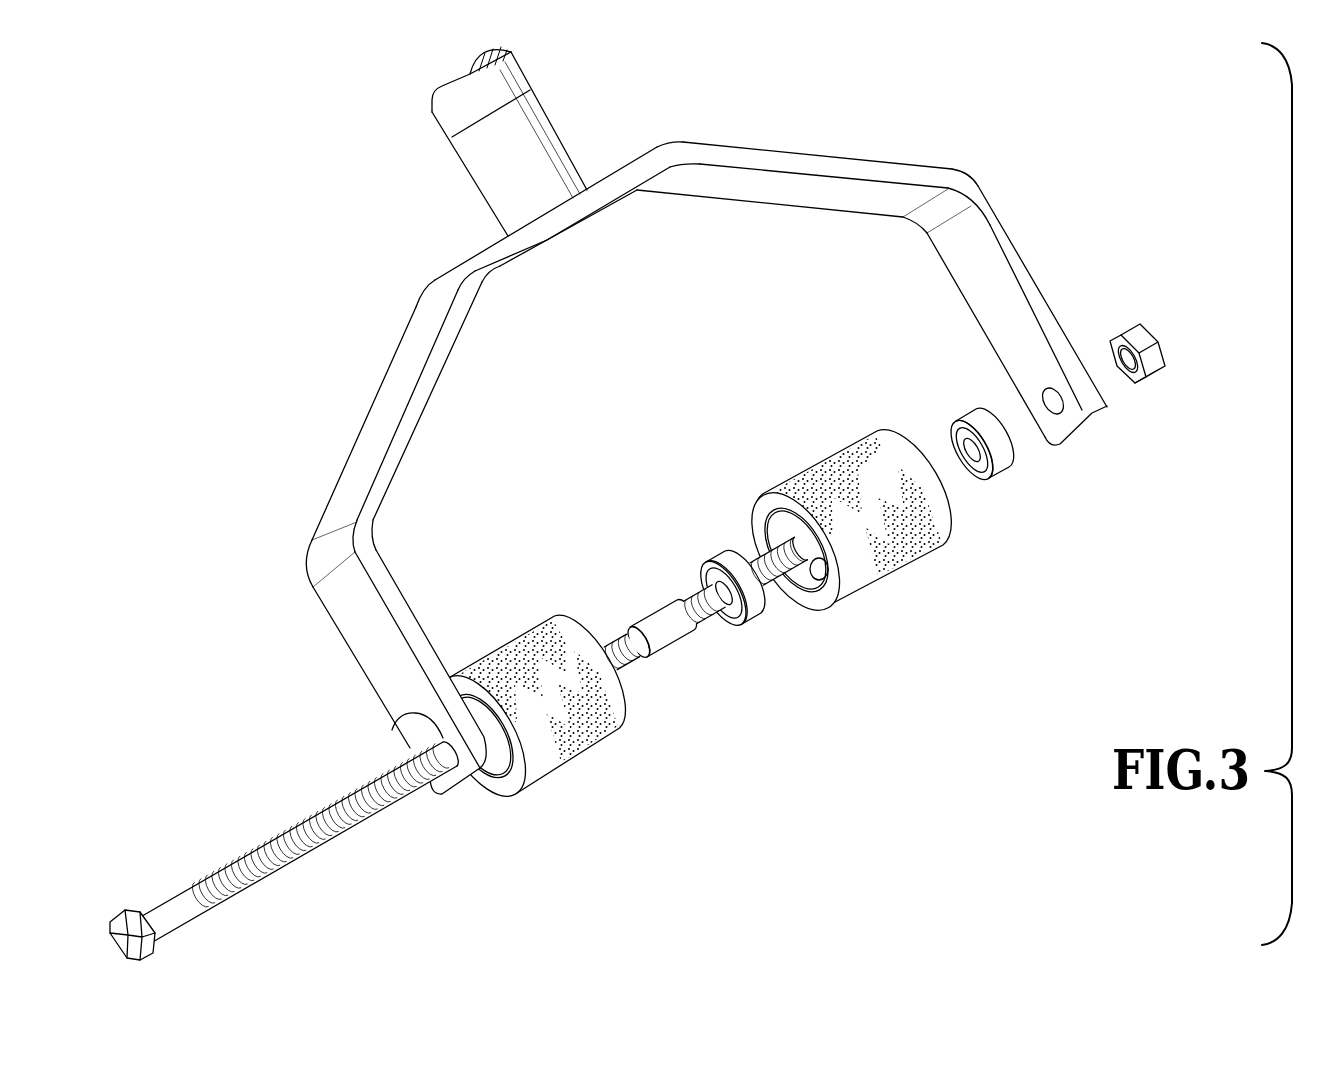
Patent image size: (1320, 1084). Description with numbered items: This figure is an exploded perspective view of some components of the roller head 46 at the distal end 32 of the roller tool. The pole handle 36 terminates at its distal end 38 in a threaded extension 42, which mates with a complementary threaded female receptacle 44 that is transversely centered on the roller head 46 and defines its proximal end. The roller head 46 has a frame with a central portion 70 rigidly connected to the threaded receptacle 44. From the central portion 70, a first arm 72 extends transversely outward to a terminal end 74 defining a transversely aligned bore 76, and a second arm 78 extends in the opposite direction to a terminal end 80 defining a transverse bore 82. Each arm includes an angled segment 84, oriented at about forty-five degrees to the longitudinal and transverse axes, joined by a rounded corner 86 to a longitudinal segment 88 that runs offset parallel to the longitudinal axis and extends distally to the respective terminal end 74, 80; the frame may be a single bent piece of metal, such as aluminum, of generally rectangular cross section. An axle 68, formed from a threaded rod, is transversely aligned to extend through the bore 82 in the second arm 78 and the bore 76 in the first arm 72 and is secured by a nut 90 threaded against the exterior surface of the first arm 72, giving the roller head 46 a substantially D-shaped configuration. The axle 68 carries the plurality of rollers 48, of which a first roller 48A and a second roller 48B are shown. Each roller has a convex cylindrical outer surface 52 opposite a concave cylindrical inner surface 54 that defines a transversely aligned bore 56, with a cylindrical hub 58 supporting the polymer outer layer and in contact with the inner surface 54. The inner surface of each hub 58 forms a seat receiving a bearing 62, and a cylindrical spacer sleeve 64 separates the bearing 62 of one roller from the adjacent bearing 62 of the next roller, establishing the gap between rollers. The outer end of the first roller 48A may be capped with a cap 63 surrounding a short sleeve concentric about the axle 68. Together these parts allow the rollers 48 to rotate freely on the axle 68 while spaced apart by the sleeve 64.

The distal end 32 is at (893, 722).
The pole handle 36 is at (436, 118).
The distal end of pole handle 38 is at (452, 90).
The threaded extension 42 is at (507, 157).
The threaded female receptacle 44 is at (563, 133).
The roller head 46 is at (706, 456).
The first arm 72 is at (834, 152).
The plurality of rollers 48 is at (898, 574).
The first roller 48A is at (523, 729).
The second roller 48B is at (822, 578).
The convex cylindrical outer surface 52 is at (884, 509).
The concave cylindrical inner surface 54 is at (830, 578).
The bore 56 is at (800, 577).
The cylindrical hub 58 is at (775, 508).
The bearing 62 is at (1002, 470).
The cap 63 is at (486, 776).
The spacer sleeve 64 is at (677, 645).
The axle 68 is at (223, 863).
The central portion 70 is at (557, 225).
The terminal end 74 is at (1103, 415).
The bore 76 is at (1060, 413).
The second arm 78 is at (384, 379).
The terminal end 80 is at (453, 792).
The bore 82 is at (400, 720).
The angled segment 84 is at (778, 160).
The rounded corner 86 is at (950, 175).
The longitudinal segment 88 is at (977, 285).
The nut 90 is at (1147, 330).